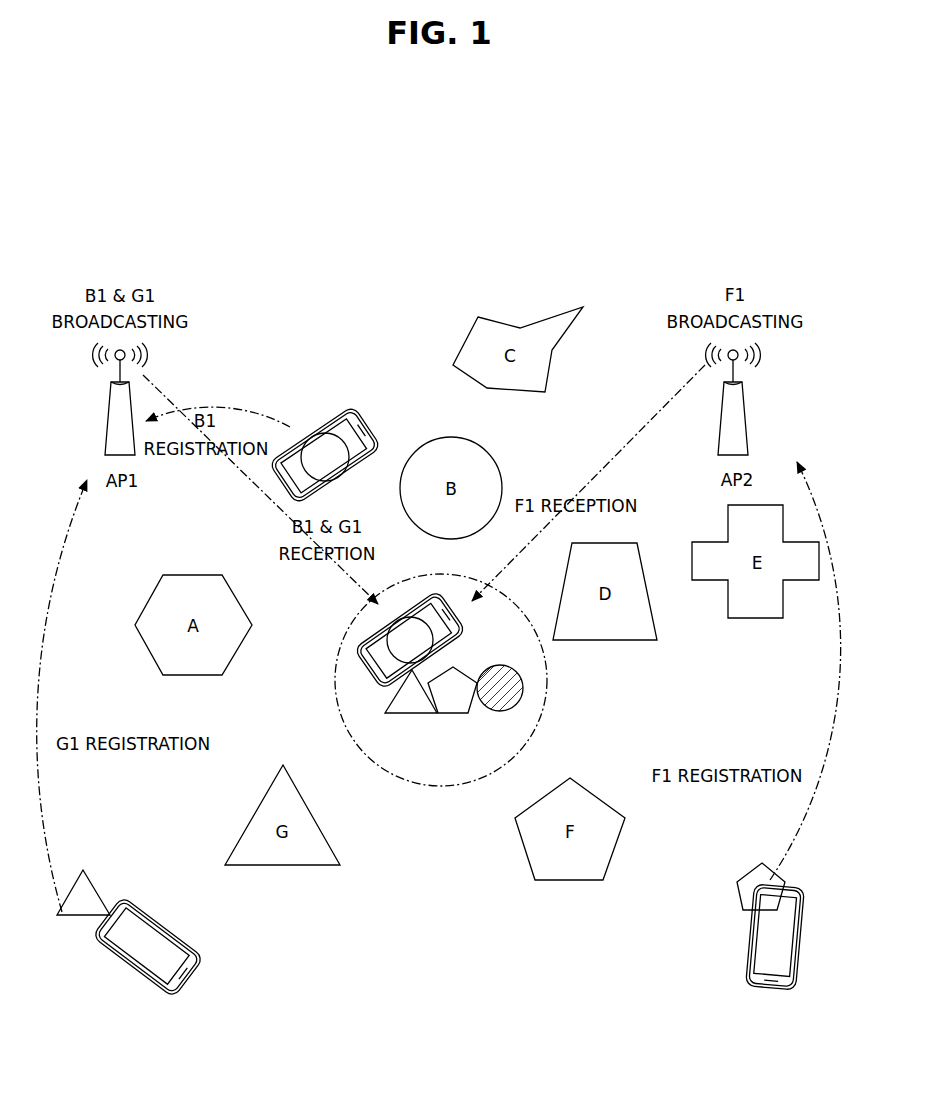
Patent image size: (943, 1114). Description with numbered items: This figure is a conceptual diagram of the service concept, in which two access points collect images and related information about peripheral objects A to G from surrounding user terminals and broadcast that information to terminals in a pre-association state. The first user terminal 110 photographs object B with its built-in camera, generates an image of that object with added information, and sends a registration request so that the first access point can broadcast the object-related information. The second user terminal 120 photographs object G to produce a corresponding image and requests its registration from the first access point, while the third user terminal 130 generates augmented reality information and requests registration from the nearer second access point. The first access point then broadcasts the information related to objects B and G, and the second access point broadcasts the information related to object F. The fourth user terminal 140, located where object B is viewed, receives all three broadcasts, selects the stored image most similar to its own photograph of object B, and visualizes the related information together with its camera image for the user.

The terminal 1 110 is at (347, 405).
The terminal 2 120 is at (120, 890).
The terminal 3 130 is at (745, 943).
The terminal 4 140 is at (460, 580).